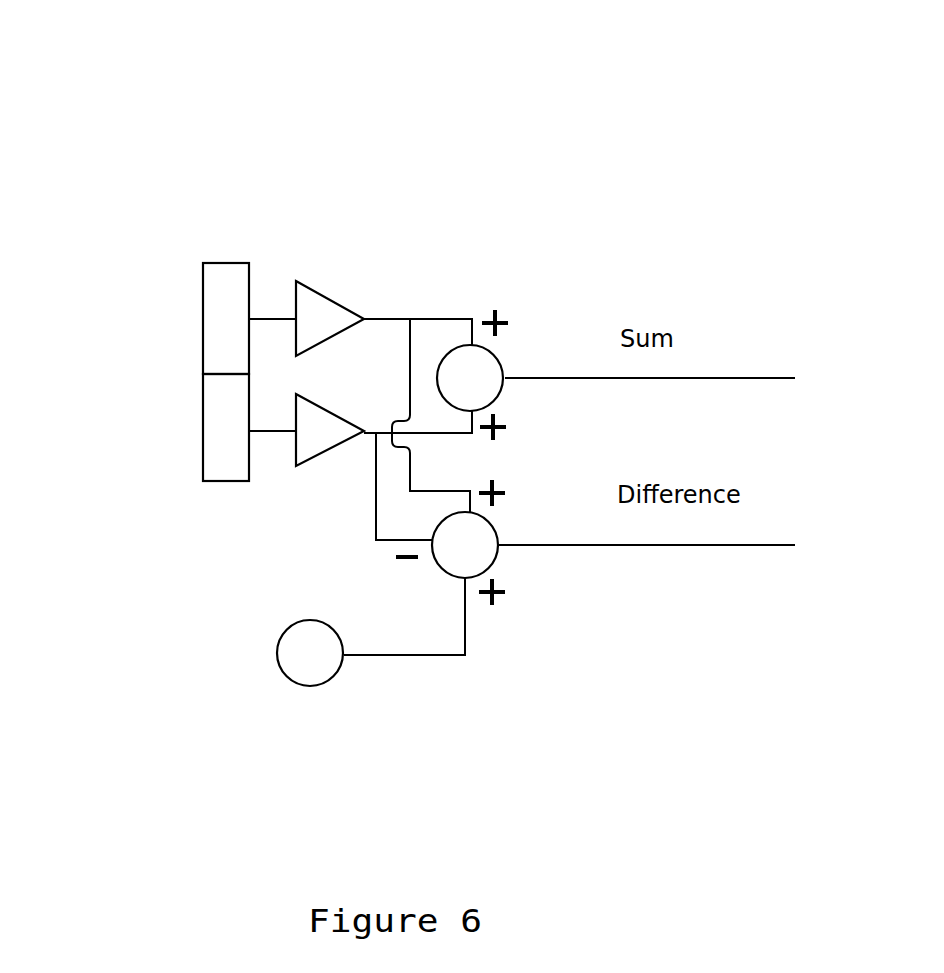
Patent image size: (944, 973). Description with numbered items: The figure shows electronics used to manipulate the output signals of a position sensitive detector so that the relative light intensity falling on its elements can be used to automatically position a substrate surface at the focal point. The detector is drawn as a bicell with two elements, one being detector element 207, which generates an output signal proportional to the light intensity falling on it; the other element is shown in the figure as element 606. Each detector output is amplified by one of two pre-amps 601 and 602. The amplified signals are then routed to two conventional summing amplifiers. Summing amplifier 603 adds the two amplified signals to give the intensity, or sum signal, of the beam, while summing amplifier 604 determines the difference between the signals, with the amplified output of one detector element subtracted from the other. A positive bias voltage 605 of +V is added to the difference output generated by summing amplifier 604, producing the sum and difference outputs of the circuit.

The detector element 207 is at (229, 428).
The pre-amp 601 is at (319, 318).
The pre-amp 602 is at (310, 462).
The summing amplifier 603 is at (499, 353).
The summing amplifier 604 is at (497, 558).
The positive bias voltage 605 is at (335, 677).
The split photodetector (upper segment) 606 is at (237, 306).